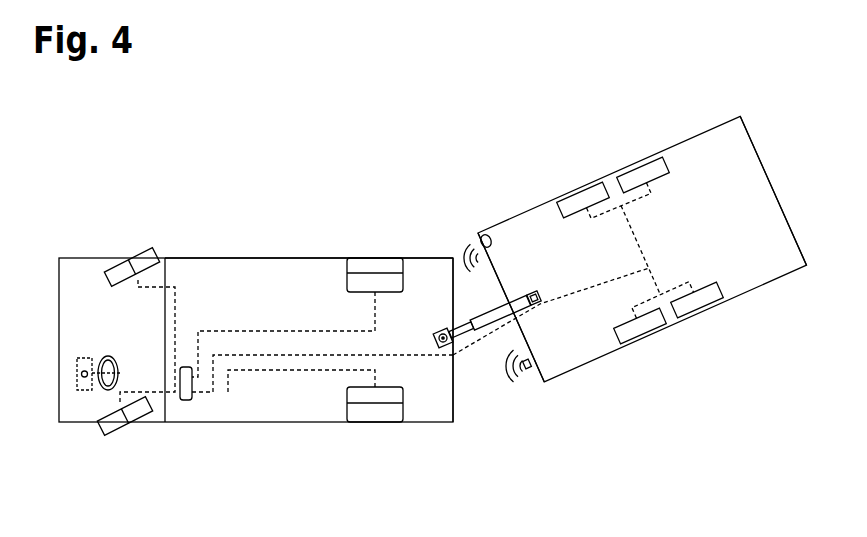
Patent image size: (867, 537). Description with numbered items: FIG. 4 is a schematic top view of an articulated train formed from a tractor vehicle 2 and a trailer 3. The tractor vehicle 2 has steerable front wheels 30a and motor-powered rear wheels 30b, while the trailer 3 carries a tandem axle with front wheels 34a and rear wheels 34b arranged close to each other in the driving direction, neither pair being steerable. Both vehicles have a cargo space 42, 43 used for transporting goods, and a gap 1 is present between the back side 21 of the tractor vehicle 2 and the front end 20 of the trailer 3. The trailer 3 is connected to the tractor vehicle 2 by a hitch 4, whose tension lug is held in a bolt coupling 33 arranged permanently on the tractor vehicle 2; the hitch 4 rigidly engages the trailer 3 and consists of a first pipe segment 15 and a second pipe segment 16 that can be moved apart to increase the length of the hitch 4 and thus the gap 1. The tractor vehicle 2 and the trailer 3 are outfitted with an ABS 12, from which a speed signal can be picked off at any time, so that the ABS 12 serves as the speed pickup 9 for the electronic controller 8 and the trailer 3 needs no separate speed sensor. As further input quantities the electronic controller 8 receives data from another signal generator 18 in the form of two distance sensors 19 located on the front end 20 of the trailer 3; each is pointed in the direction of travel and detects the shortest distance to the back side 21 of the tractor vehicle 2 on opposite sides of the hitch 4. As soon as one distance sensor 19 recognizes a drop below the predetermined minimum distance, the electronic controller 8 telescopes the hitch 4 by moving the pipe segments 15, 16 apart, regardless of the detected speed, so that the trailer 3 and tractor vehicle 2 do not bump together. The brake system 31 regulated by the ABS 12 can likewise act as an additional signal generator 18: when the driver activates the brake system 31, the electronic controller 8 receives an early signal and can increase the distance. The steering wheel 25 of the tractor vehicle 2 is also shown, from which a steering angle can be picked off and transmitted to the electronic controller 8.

The gap 1 is at (490, 398).
The tractor vehicle 2 is at (251, 302).
The trailer 3 is at (735, 216).
The hitch 4 is at (470, 305).
The electronic controller 8 is at (545, 302).
The speed pickup 9 is at (190, 427).
The ABS 12 is at (189, 400).
The first pipe segment 15 is at (518, 300).
The second pipe segment 16 is at (450, 348).
The signal generator 18 is at (267, 370).
The distance sensors 19 is at (536, 360).
The front end 20 is at (518, 390).
The back side 21 is at (455, 397).
The steering wheel 25 is at (122, 372).
The front wheels 30a is at (124, 257).
The rear wheels 30b is at (357, 265).
The brake system 31 is at (573, 294).
The bolt coupling 33 is at (432, 333).
The front wheels of trailer 34a is at (585, 195).
The rear wheels of trailer 34b is at (642, 172).
The cargo space of tractor vehicle 42 is at (200, 268).
The cargo space of trailer 43 is at (752, 248).